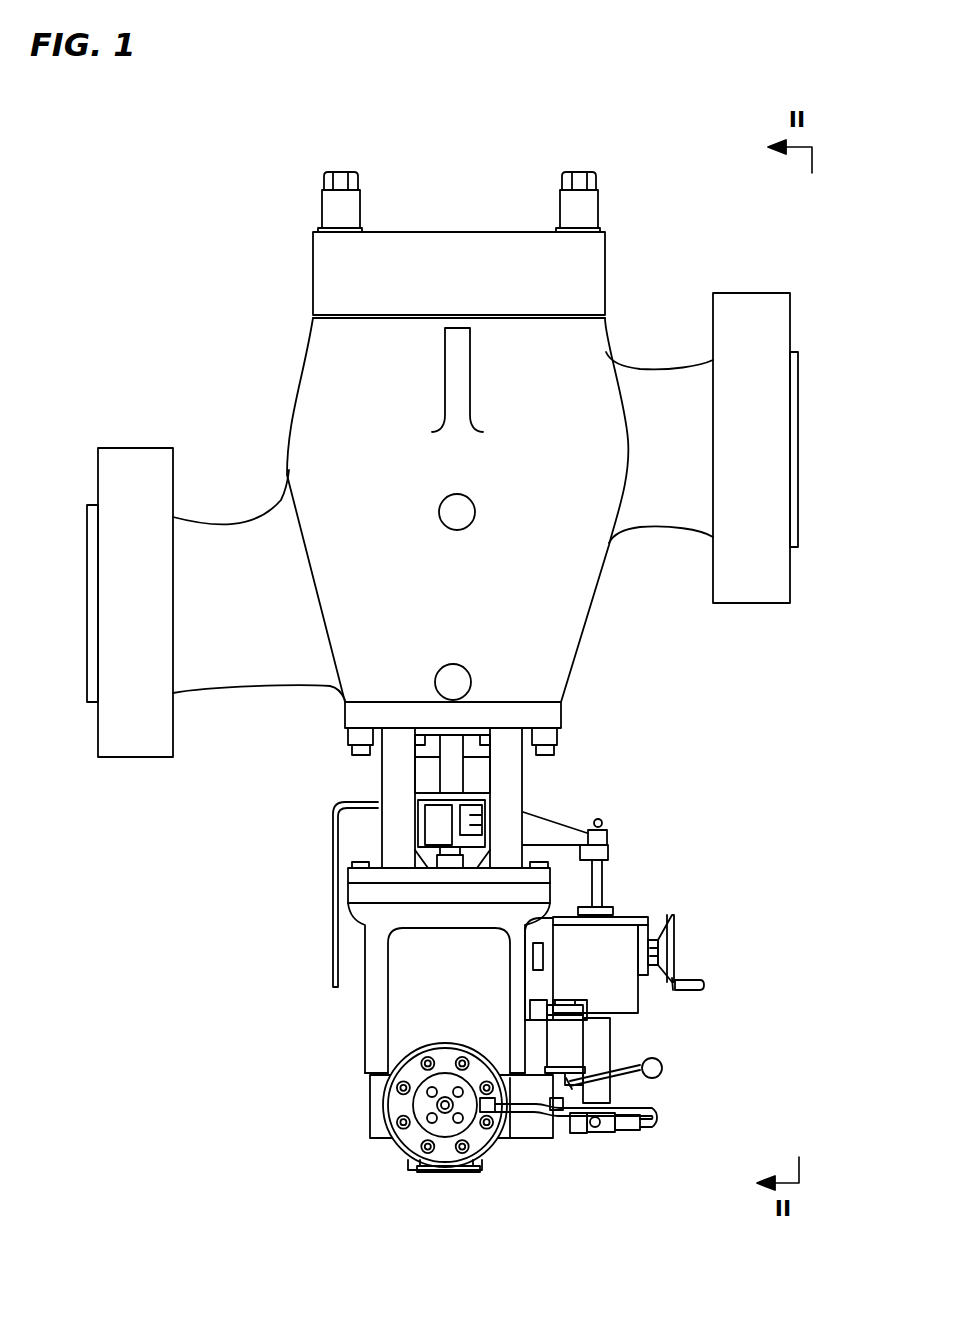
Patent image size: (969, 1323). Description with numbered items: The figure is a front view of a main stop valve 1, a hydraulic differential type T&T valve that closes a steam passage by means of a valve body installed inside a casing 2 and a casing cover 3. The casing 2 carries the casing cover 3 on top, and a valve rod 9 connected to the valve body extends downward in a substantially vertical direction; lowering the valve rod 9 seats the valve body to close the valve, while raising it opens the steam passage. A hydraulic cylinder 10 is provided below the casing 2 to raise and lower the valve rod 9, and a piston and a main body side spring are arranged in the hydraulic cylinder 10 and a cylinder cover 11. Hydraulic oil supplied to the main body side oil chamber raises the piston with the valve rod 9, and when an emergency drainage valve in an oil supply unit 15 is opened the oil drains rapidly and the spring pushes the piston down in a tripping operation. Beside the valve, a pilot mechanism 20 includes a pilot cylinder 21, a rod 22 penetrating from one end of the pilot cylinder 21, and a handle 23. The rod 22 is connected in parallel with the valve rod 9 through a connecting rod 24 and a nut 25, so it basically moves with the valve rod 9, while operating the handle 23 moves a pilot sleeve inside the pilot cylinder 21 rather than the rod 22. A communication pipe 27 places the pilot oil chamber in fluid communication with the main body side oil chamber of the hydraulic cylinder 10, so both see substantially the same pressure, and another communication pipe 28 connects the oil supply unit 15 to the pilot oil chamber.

The main stop valve 1 is at (680, 175).
The casing 2 is at (525, 627).
The casing cover 3 is at (553, 293).
The valve rod 9 is at (453, 762).
The hydraulic cylinder 10 is at (420, 990).
The cylinder cover 11 is at (360, 892).
The oil supply unit 15 is at (425, 1103).
The pilot mechanism 20 is at (650, 901).
The pilot cylinder 21 is at (595, 1045).
The rod 22 is at (596, 882).
The handle 23 is at (672, 930).
The connecting rod 24 is at (540, 837).
The nut 25 is at (640, 813).
The communication pipe 27 is at (663, 1110).
The communication pipe 28 is at (557, 1122).